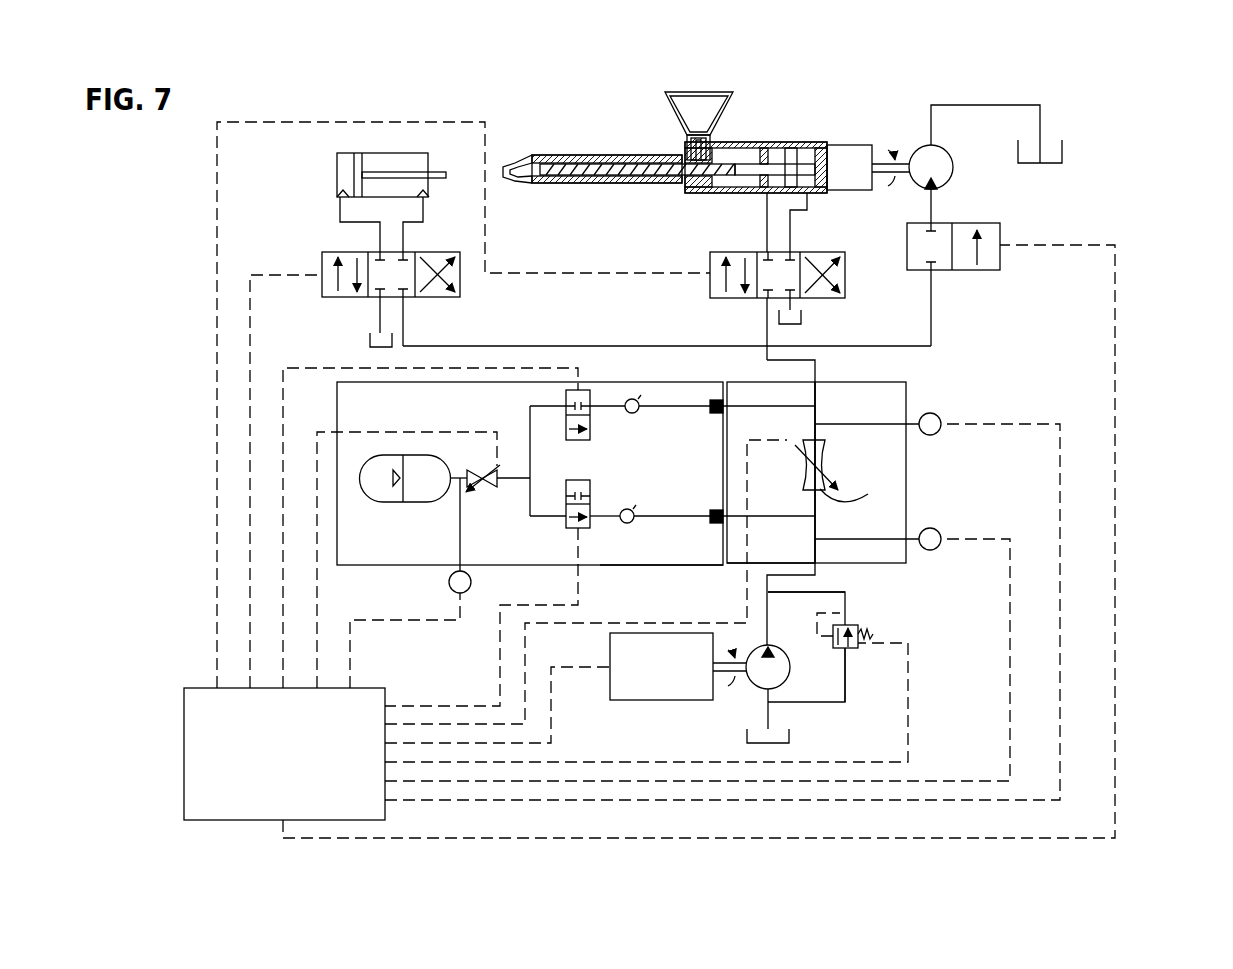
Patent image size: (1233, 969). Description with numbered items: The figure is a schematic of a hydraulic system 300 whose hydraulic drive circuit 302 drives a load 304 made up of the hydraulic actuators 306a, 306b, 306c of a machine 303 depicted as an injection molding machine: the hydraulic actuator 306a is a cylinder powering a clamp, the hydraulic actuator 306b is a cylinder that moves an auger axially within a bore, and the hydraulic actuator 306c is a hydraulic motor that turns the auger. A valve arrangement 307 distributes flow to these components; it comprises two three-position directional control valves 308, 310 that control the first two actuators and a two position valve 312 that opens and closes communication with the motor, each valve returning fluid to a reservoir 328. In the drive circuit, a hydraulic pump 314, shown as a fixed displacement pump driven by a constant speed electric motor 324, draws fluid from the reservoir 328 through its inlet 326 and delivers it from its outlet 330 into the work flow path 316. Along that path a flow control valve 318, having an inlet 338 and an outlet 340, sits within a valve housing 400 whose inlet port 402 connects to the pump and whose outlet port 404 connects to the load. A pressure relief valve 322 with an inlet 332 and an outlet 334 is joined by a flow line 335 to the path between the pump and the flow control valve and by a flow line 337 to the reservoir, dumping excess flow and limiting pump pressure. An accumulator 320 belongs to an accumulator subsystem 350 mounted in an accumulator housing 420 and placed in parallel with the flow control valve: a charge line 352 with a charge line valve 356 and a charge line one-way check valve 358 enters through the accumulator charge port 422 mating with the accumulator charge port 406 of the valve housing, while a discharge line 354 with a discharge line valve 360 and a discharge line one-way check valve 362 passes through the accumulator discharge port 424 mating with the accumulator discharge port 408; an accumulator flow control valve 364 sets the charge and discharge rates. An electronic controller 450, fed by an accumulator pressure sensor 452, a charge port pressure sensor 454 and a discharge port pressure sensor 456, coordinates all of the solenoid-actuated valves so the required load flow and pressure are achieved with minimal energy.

The hydraulic system 300 is at (1157, 148).
The hydraulic drive circuit 302 is at (927, 568).
The machine 303 is at (748, 130).
The load 304 is at (759, 355).
The hydraulic actuator 306a is at (388, 153).
The hydraulic actuator 306b is at (796, 141).
The hydraulic actuator 306c is at (948, 157).
The valve arrangement 307 is at (958, 306).
The directional control valve 308 is at (337, 253).
The directional control valve 310 is at (822, 252).
The two position valve 312 is at (1000, 233).
The hydraulic pump 314 is at (792, 668).
The work flow path 316 is at (818, 522).
The flow control valve 318 is at (828, 456).
The accumulator 320 is at (392, 503).
The pressure relief valve 322 is at (872, 642).
The electric motor 324 is at (628, 702).
The inlet 326 is at (766, 689).
The reservoir 328 is at (370, 338).
The outlet 330 is at (767, 645).
The inlet 332 is at (846, 625).
The outlet 334 is at (846, 648).
The flow line 335 is at (790, 594).
The flow line 337 is at (846, 686).
The inlet 338 is at (856, 488).
The outlet 340 is at (816, 439).
The accumulator subsystem 350 is at (390, 556).
The charge line 352 is at (668, 519).
The discharge line 354 is at (668, 407).
The charge line valve 356 is at (608, 475).
The charge line one-way check valve 358 is at (632, 508).
The discharge line valve 360 is at (565, 397).
The discharge line one-way check valve 362 is at (628, 414).
The accumulator flow control valve 364 is at (496, 489).
The valve housing 400 is at (907, 478).
The inlet port 402 is at (818, 567).
The outlet port 404 is at (817, 381).
The accumulator charge port 406 is at (733, 521).
The accumulator discharge port 408 is at (728, 405).
The accumulator housing 420 is at (665, 566).
The accumulator charge port 422 is at (712, 509).
The accumulator discharge port 424 is at (713, 416).
The electronic controller 450 is at (184, 708).
The accumulator pressure sensor 452 is at (472, 582).
The charge port pressure sensor 454 is at (938, 528).
The discharge port pressure sensor 456 is at (938, 412).